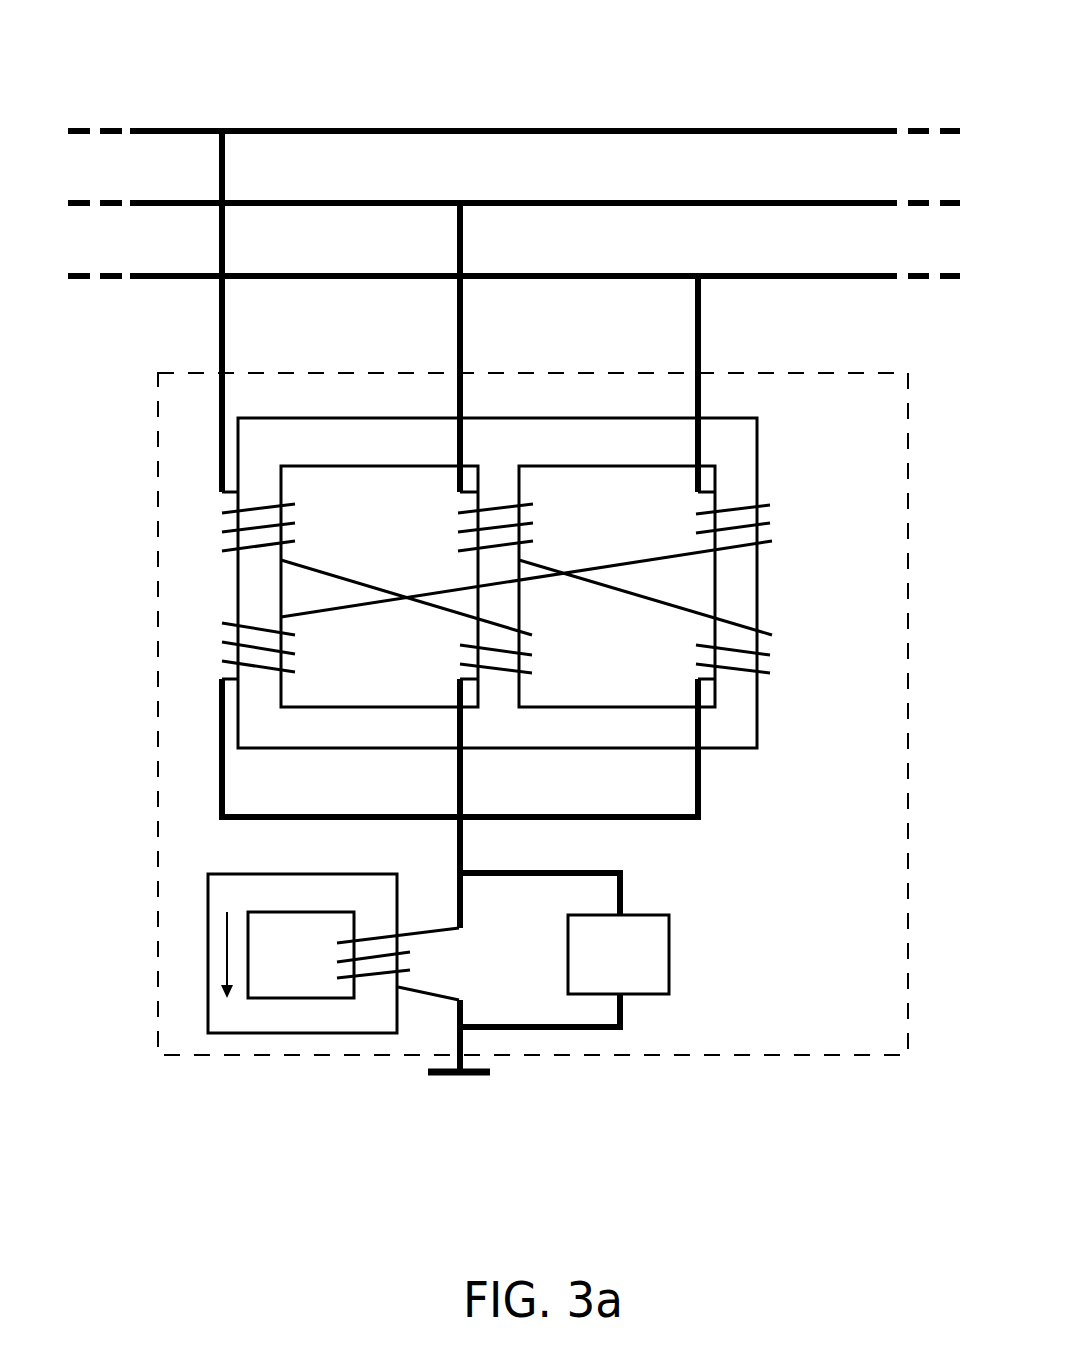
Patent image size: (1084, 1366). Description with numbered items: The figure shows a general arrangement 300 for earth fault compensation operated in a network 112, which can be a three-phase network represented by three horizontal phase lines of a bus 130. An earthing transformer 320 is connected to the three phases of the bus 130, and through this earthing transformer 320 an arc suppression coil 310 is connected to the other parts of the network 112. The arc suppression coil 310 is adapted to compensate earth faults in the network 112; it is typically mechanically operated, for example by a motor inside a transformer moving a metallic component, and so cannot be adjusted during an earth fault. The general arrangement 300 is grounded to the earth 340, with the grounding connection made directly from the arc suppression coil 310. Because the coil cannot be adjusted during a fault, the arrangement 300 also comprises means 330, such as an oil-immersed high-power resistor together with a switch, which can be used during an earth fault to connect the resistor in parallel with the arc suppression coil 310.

The second network 112 is at (514, 140).
The bus 130 is at (363, 128).
The general arrangement 300 is at (158, 590).
The arc suppression coil 310 is at (323, 1035).
The earthing transformer 320 is at (757, 462).
The means 330 is at (669, 950).
The earth 340 is at (467, 1077).